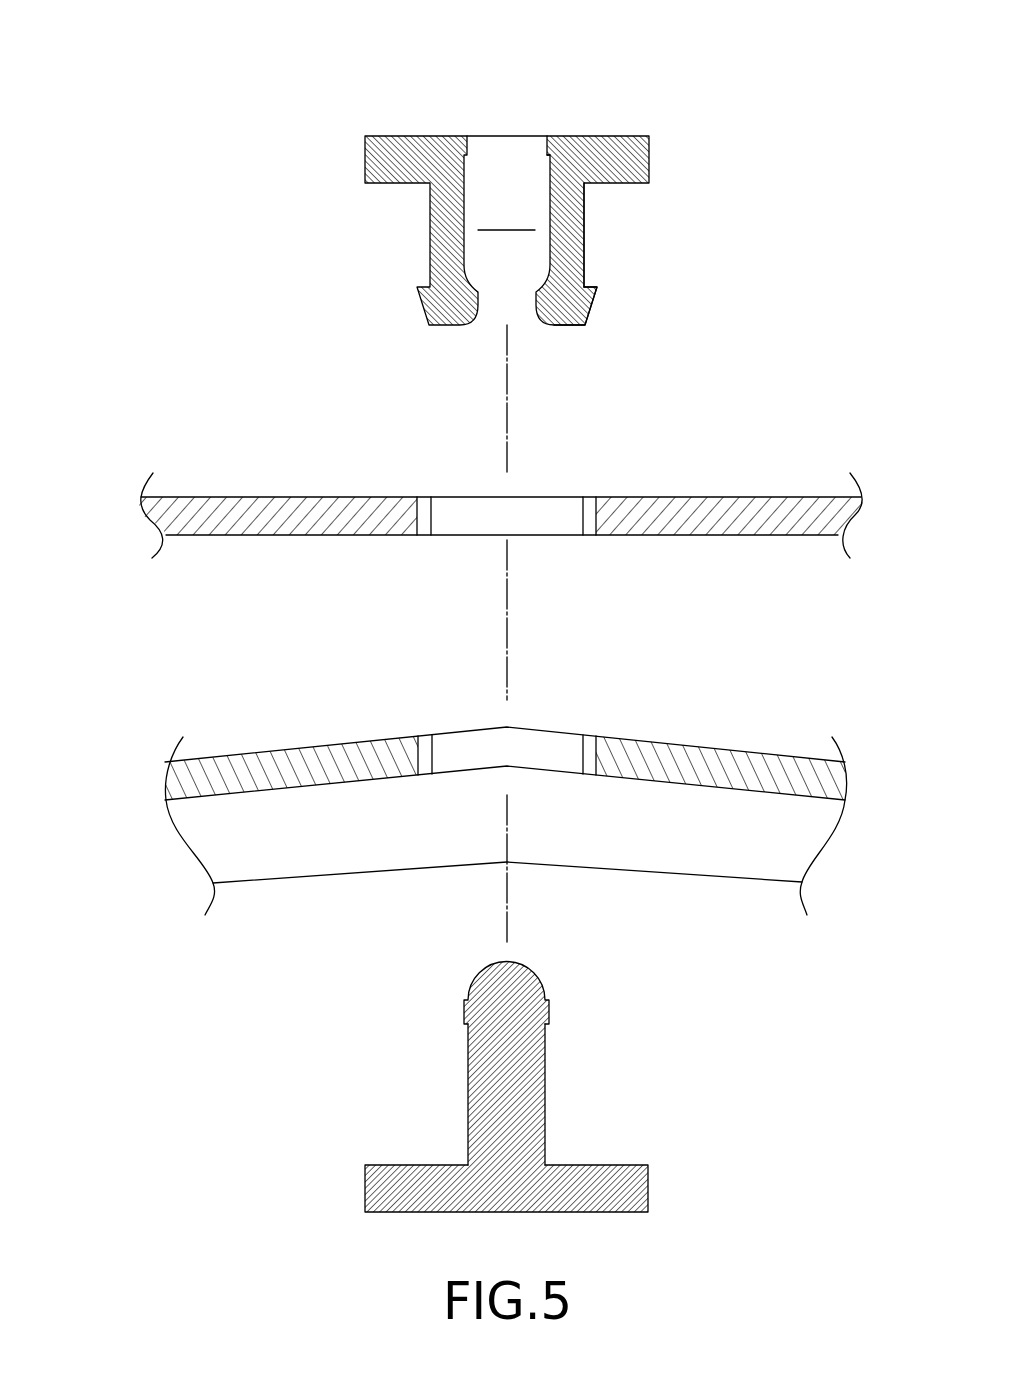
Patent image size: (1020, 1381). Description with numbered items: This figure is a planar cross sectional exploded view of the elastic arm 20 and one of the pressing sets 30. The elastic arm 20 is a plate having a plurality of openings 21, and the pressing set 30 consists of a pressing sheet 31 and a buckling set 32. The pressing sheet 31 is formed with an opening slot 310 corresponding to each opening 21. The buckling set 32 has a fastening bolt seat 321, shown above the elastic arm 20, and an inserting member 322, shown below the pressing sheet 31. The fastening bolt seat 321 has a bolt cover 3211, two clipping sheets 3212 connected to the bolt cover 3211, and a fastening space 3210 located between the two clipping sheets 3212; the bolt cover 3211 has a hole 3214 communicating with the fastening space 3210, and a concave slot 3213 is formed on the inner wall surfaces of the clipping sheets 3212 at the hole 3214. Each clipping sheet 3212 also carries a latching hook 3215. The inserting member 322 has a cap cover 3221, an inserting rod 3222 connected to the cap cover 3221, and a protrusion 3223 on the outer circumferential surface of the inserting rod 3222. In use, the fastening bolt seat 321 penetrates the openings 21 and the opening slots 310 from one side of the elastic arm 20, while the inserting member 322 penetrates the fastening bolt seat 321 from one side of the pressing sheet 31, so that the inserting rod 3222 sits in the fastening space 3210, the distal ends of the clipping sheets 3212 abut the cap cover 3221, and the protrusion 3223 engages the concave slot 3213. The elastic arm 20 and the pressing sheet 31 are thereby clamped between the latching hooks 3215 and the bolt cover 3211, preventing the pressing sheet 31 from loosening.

The elastic arm 20 is at (747, 512).
The opening 21 is at (535, 508).
The pressing set 30 is at (113, 397).
The pressing sheet 31 is at (260, 763).
The buckling set 32 is at (372, 277).
The opening slot 310 is at (537, 748).
The fastening bolt seat 321 is at (690, 27).
The inserting member 322 is at (720, 1042).
The fastening space 3210 is at (483, 205).
The bolt cover 3211 is at (612, 141).
The clipping sheet 3212 is at (570, 233).
The concave slot 3213 is at (531, 141).
The hole 3214 is at (489, 141).
The latching hook 3215 is at (598, 300).
The cap cover 3221 is at (592, 1190).
The inserting rod 3222 is at (535, 1097).
The protrusion 3223 is at (550, 1007).